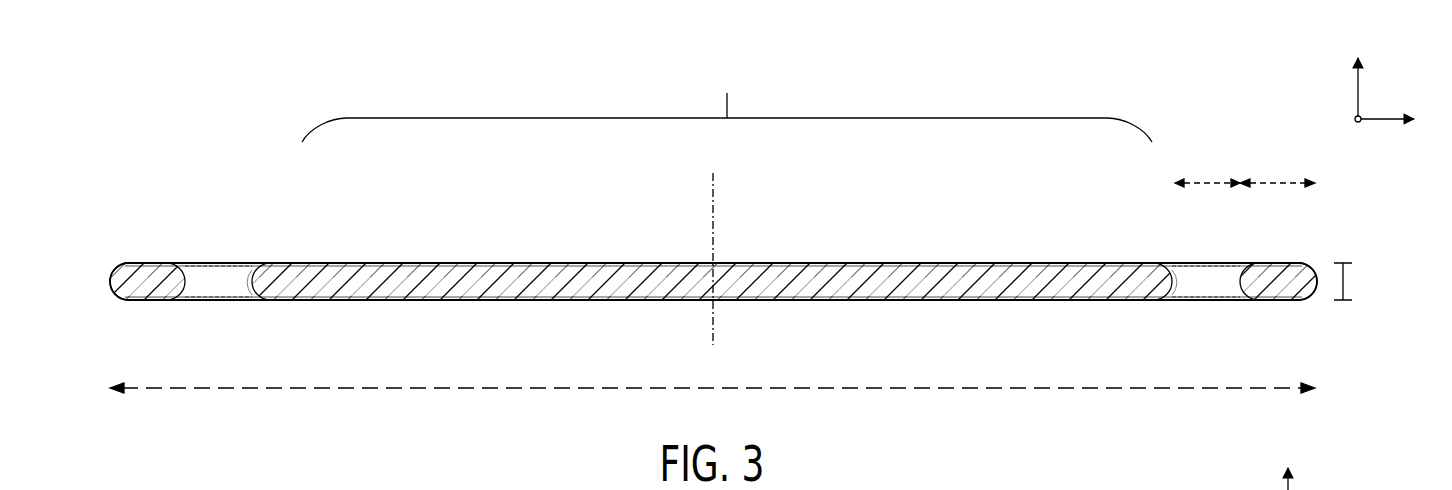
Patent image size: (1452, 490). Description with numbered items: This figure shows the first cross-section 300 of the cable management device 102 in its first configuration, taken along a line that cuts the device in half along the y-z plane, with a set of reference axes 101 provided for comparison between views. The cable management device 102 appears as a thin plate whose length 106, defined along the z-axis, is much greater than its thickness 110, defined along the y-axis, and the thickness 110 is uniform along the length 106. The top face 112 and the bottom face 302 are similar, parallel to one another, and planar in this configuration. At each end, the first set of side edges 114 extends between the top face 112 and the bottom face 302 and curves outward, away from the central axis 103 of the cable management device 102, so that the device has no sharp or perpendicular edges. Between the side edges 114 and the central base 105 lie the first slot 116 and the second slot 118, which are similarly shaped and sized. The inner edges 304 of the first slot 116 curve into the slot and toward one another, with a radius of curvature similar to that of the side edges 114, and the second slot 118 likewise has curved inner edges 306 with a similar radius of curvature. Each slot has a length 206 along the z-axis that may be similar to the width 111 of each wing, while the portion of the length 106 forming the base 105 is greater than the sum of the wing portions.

The first cross-section 300 is at (138, 110).
The cable management device 102 is at (258, 175).
The first set of side edges 114 is at (112, 280).
The first slot 116 is at (205, 270).
The second slot 118 is at (1205, 268).
The top face 112 is at (515, 262).
The inner edges of the first slot 304 is at (252, 263).
The inner edges of the second slot 306 is at (1172, 280).
The bottom face 302 is at (620, 300).
The base 105 is at (727, 97).
The central axis 103 is at (715, 203).
The length of slot 206 is at (1222, 183).
The width of wing 111 is at (1292, 183).
The thickness 110 is at (1348, 282).
The length 106 is at (205, 390).
The reference axes 101 is at (1340, 100).